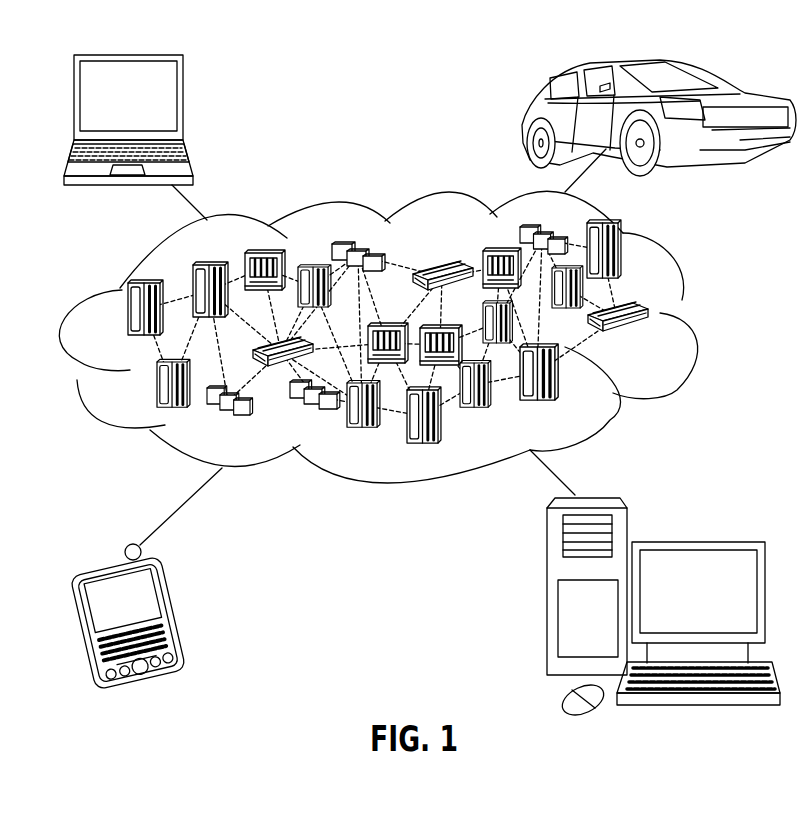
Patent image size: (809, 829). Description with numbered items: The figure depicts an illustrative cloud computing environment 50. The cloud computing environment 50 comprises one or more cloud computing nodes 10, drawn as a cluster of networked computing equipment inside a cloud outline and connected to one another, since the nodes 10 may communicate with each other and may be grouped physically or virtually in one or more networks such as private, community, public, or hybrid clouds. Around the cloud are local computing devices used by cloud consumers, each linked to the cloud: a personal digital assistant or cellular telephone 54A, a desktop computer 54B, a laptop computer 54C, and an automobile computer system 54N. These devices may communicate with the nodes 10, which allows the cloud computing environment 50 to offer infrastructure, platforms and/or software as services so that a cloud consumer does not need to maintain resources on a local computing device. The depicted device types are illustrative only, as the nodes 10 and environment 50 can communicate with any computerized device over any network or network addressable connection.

The cloud computing nodes 10 is at (650, 342).
The cloud computing environment 50 is at (700, 318).
The personal digital assistant or cellular telephone 54A is at (172, 617).
The desktop computer 54B is at (697, 541).
The laptop computer 54C is at (185, 103).
The automobile computer system 54N is at (524, 118).